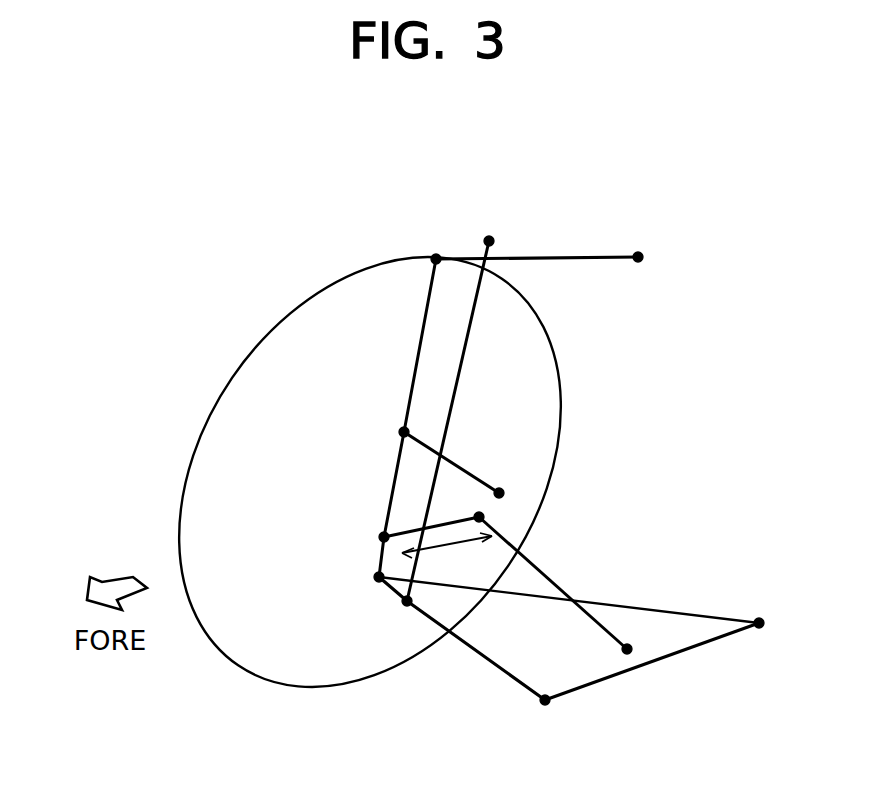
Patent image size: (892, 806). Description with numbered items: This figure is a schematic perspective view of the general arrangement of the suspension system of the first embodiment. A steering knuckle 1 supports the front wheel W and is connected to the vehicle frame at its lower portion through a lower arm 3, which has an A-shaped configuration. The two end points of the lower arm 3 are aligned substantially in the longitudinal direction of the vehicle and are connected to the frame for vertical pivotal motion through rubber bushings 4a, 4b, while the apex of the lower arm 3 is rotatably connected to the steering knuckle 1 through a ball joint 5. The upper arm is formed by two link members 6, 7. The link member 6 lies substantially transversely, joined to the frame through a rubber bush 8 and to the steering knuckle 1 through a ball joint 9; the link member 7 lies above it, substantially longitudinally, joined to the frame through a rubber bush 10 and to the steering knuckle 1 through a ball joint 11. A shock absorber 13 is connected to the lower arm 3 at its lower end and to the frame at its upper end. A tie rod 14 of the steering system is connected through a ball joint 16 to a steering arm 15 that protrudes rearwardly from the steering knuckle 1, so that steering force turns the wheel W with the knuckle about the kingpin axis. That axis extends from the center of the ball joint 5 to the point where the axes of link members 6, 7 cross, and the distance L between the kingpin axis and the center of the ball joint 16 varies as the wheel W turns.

The wheel W is at (232, 387).
The steering knuckle 1 is at (420, 357).
The lower arm 3 is at (493, 665).
The rubber bushing 4a is at (545, 705).
The rubber bushing 4b is at (759, 628).
The ball joint 5 is at (379, 577).
The link member 6 is at (465, 470).
The link member 7 is at (553, 257).
The rubber bush 8 is at (499, 493).
The ball joint 9 is at (404, 432).
The rubber bush 10 is at (638, 257).
The ball joint 11 is at (436, 257).
The shock absorber 13 is at (466, 350).
The tie rod 14 is at (545, 575).
The steering arm 15 is at (384, 537).
The ball joint 16 is at (479, 517).
The distance L is at (447, 557).